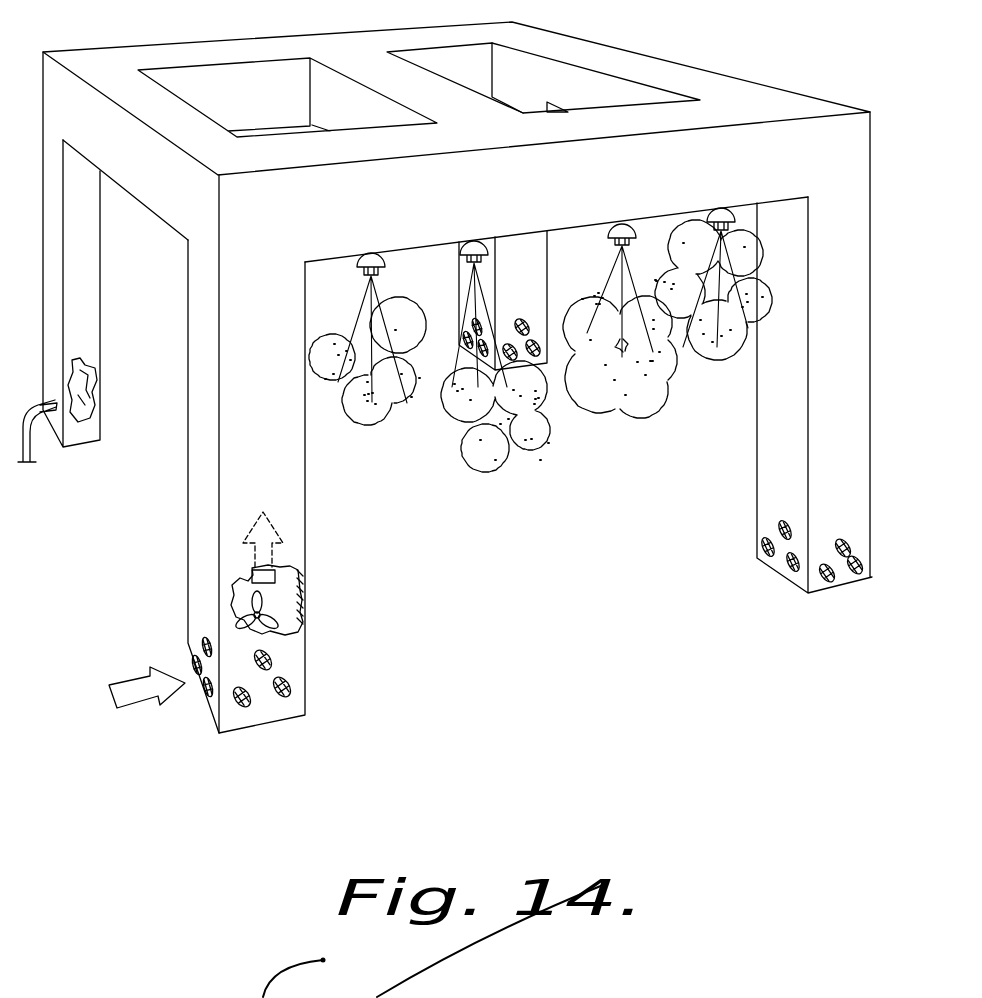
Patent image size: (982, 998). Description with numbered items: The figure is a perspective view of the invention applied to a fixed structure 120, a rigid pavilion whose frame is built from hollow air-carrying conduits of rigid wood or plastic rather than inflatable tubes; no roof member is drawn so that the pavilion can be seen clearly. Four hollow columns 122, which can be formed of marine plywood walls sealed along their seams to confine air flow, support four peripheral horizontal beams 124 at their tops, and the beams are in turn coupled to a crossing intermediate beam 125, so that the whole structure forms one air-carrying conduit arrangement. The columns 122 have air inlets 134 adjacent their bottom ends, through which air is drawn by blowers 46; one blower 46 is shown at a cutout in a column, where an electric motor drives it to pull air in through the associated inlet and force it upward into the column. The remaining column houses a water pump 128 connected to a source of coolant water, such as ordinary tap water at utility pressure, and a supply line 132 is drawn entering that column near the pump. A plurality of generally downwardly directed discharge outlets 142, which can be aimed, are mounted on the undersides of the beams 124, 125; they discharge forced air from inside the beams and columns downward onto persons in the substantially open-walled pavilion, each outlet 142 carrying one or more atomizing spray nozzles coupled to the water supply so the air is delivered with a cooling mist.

The fixed structure 120 is at (862, 110).
The columns 122 is at (93, 268).
The peripheral horizontal beams 124 is at (247, 47).
The crossing intermediate beam 125 is at (470, 105).
The pump 128 is at (80, 403).
The supply pipe 132 is at (30, 443).
The discharge outlets 142 is at (371, 262).
The blower 46 is at (277, 610).
The air inlets 134 is at (297, 680).